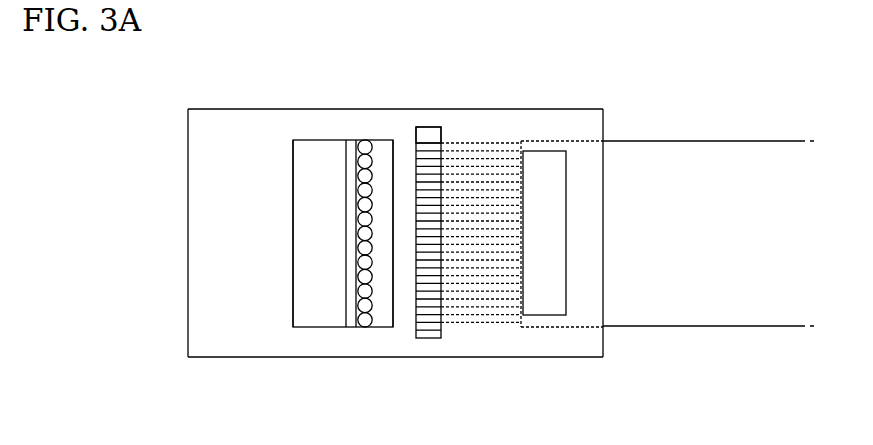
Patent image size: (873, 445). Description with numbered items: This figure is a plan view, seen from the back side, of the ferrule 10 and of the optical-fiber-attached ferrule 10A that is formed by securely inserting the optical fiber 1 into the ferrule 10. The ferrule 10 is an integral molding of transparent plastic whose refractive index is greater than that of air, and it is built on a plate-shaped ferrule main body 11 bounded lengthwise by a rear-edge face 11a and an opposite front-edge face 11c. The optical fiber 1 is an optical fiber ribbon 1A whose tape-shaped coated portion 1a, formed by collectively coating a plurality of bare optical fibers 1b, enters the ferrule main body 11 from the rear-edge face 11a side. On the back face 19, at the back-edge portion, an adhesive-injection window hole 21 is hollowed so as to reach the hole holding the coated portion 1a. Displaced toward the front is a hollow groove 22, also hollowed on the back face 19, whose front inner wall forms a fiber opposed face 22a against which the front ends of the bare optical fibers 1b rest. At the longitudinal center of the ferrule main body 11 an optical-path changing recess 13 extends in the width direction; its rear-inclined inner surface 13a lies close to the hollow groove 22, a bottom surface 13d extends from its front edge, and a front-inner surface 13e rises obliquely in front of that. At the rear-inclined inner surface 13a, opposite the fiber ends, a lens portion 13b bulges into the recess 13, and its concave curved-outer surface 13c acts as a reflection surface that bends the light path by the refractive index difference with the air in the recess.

The ferrule 10 is at (586, 102).
The optical-fiber-attached ferrule 10A is at (497, 98).
The ferrule main body 11 is at (603, 109).
The rear-edge face 11a is at (603, 330).
The front-edge face 11c is at (188, 190).
The back face 19 is at (210, 325).
The optical-path changing recess 13 is at (320, 146).
The rear-inclined inner surface 13a is at (378, 318).
The lens portion 13b is at (365, 233).
The curved-outer surface 13c is at (360, 164).
The bottom surface 13d is at (336, 320).
The front-inner surface 13e is at (313, 318).
The hollow groove 22 is at (424, 136).
The fiber opposed face 22a is at (433, 133).
The coated portion 1a is at (424, 326).
The adhesive-injection window hole 21 is at (548, 160).
The optical fiber ribbon 1A is at (711, 335).
The optical fiber 1 is at (562, 234).
The bare optical fibers 1b is at (762, 328).